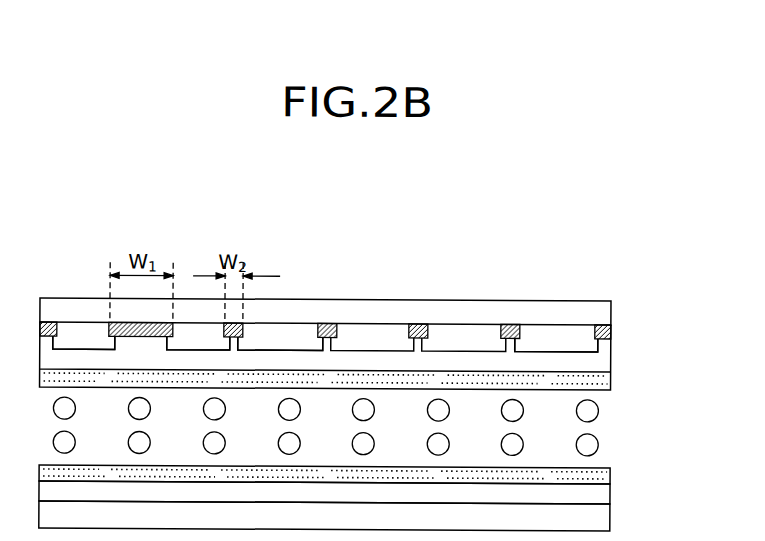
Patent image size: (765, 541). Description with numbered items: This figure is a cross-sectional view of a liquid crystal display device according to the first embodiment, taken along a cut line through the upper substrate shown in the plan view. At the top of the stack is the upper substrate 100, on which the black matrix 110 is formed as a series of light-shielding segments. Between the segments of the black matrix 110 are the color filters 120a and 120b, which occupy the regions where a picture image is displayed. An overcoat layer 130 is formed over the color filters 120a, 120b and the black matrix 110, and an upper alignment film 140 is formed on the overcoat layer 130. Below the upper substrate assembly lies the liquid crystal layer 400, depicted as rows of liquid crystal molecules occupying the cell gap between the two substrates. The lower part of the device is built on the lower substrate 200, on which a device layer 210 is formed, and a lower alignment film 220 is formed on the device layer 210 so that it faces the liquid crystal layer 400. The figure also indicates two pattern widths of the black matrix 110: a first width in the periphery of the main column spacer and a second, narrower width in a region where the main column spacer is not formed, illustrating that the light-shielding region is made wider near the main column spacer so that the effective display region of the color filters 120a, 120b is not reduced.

The upper substrate 100 is at (607, 308).
The black matrix 110 is at (607, 333).
The color filter 120a is at (80, 333).
The color filter 120b is at (287, 335).
The overcoat layer 130 is at (607, 358).
The upper alignment film 140 is at (607, 381).
The liquid crystal layer 400 is at (607, 426).
The lower alignment film 220 is at (607, 475).
The device layer 210 is at (607, 495).
The lower substrate 200 is at (607, 519).